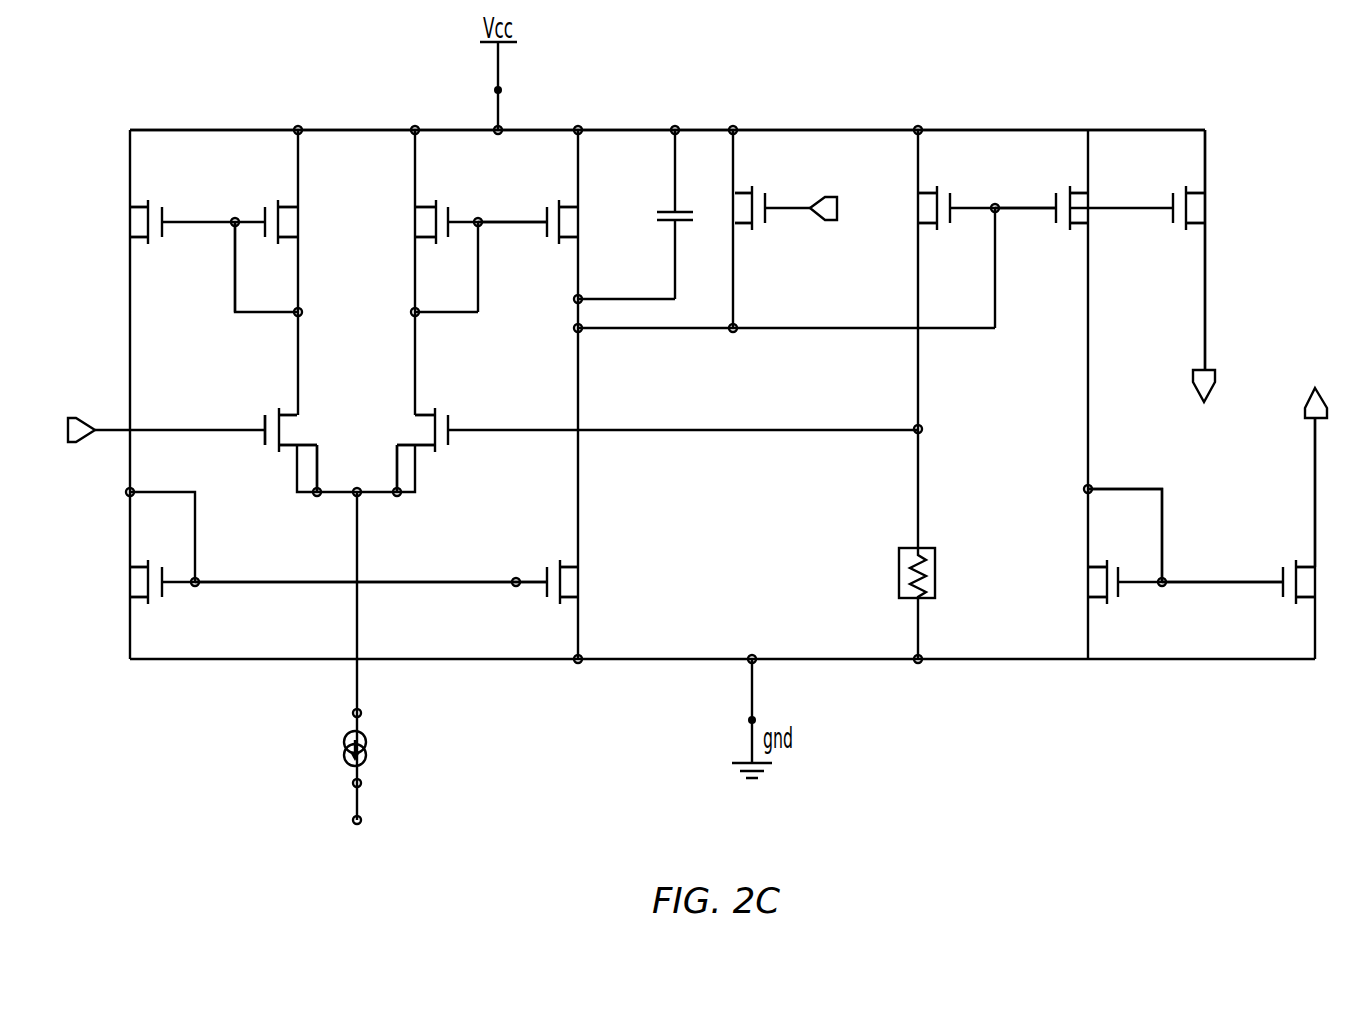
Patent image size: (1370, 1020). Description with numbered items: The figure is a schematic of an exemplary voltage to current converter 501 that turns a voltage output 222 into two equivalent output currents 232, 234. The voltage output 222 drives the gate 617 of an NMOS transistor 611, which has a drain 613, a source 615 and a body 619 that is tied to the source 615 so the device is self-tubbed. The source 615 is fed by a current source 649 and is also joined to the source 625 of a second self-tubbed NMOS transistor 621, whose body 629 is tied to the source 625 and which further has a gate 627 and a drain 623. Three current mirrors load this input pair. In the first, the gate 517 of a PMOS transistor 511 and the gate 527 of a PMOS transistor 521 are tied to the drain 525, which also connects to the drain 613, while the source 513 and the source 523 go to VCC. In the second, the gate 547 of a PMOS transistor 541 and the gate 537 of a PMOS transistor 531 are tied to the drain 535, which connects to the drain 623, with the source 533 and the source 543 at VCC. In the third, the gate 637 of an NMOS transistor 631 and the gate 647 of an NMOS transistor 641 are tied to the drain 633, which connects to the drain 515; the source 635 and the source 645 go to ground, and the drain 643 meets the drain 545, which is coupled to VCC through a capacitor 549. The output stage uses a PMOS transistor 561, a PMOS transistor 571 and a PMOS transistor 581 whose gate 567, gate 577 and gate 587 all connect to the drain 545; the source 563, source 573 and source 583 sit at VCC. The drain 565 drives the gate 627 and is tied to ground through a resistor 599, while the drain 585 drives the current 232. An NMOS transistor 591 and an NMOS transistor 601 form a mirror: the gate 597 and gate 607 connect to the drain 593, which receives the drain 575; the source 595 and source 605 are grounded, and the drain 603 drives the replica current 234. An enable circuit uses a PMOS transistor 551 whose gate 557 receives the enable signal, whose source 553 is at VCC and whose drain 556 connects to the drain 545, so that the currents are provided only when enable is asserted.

The voltage to current converter 501 is at (183, 98).
The voltage output 222 is at (100, 428).
The current 232 is at (1207, 350).
The current 234 is at (1313, 458).
The PMOS transistor 511 is at (128, 223).
The source 513 is at (140, 207).
The drain 515 is at (142, 240).
The gate 517 is at (192, 225).
The PMOS transistor 521 is at (305, 223).
The source 523 is at (288, 207).
The drain 525 is at (280, 240).
The gate 527 is at (243, 220).
The PMOS transistor 531 is at (413, 223).
The source 533 is at (425, 207).
The drain 535 is at (430, 240).
The gate 537 is at (478, 220).
The PMOS transistor 541 is at (585, 223).
The source 543 is at (567, 207).
The drain 545 is at (565, 240).
The gate 547 is at (521, 226).
The capacitor 549 is at (662, 212).
The PMOS transistor 551 is at (730, 208).
The source 553 is at (745, 195).
The drain 556 is at (745, 235).
The gate 557 is at (782, 210).
The PMOS transistor 561 is at (915, 207).
The source 563 is at (930, 195).
The drain 565 is at (930, 235).
The gate 567 is at (970, 210).
The PMOS transistor 571 is at (1092, 218).
The source 573 is at (1078, 195).
The drain 575 is at (1073, 235).
The gate 577 is at (1040, 208).
The PMOS transistor 581 is at (1210, 210).
The source 583 is at (1193, 197).
The drain 585 is at (1190, 235).
The gate 587 is at (1157, 207).
The NMOS transistor 591 is at (1085, 581).
The drain 593 is at (1100, 560).
The source 595 is at (1107, 605).
The gate 597 is at (1137, 586).
The resistor 599 is at (937, 567).
The NMOS transistor 601 is at (1318, 581).
The drain 603 is at (1303, 560).
The source 605 is at (1297, 605).
The gate 607 is at (1263, 580).
The NMOS transistor 611 is at (300, 427).
The drain 613 is at (290, 412).
The source 615 is at (283, 453).
The gate 617 is at (233, 428).
The body 619 is at (318, 452).
The NMOS transistor 621 is at (412, 427).
The drain 623 is at (422, 412).
The source 625 is at (427, 453).
The gate 627 is at (478, 428).
The body 629 is at (397, 458).
The NMOS transistor 631 is at (128, 581).
The drain 633 is at (142, 560).
The source 635 is at (148, 605).
The gate 637 is at (222, 580).
The NMOS transistor 641 is at (582, 581).
The drain 643 is at (568, 560).
The source 645 is at (560, 605).
The gate 647 is at (490, 580).
The current source 649 is at (366, 755).